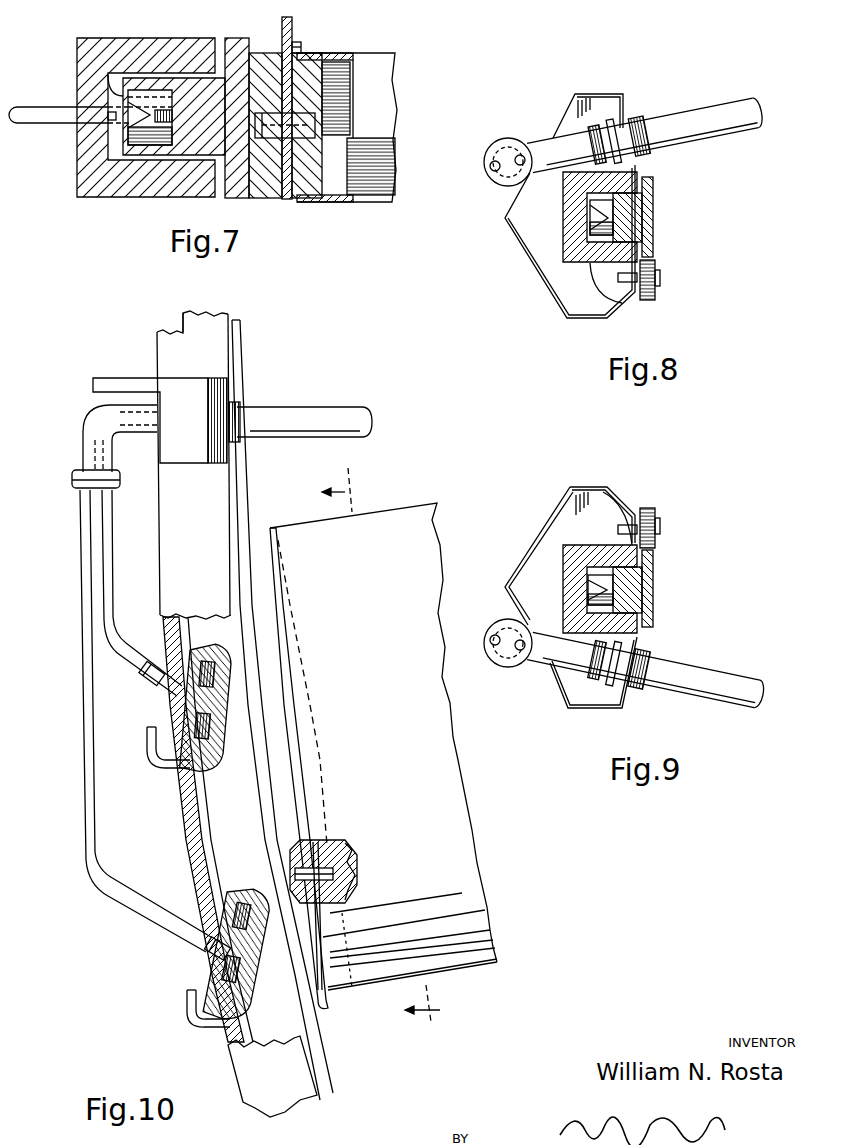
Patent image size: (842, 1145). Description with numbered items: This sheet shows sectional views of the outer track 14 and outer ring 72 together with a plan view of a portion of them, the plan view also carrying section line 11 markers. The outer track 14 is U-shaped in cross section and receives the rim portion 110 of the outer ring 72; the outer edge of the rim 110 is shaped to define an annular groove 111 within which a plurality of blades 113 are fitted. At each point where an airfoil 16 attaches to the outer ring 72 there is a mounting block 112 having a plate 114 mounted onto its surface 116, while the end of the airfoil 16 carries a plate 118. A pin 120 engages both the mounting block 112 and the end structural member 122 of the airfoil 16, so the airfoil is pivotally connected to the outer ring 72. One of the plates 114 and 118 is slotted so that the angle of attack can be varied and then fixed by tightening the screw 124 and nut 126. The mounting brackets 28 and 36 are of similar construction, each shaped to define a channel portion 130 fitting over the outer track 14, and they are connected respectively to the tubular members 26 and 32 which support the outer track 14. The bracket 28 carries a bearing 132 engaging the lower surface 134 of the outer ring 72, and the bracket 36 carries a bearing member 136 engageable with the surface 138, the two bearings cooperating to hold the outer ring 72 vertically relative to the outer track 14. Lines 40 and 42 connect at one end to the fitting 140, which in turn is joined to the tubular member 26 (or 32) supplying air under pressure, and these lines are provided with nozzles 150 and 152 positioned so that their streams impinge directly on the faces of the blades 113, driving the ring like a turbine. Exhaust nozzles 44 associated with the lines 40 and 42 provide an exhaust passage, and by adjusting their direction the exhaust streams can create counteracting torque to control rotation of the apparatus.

In FIG. 10, the section line 11- 11 is at (394, 745).
In FIG. 7, the outer track 14 is at (185, 38).
In FIG. 8, the outer track 14 is at (578, 250).
In FIG. 9, the outer track 14 is at (567, 558).
In FIG. 10, the outer track 14 is at (162, 333).
In FIG. 10, the airfoil 16 is at (422, 503).
In FIG. 8, the tubular member 26 is at (722, 103).
In FIG. 10, the tubular member 26 is at (313, 407).
In FIG. 8, the mounting bracket 28 is at (617, 94).
In FIG. 10, the mounting bracket 28 is at (132, 367).
In FIG. 9, the tubular member 32 is at (705, 668).
In FIG. 9, the mounting bracket 36 is at (570, 700).
In FIG. 7, the line 40 is at (53, 105).
In FIG. 10, the line 40 is at (117, 563).
In FIG. 10, the line 42 is at (102, 853).
In FIG. 10, the exhaust nozzle 44 is at (147, 740).
In FIG. 7, the outer ring 72 is at (235, 38).
In FIG. 8, the outer ring 72 is at (650, 177).
In FIG. 9, the outer ring 72 is at (652, 595).
In FIG. 10, the outer ring 72 is at (247, 355).
In FIG. 7, the rim portion 110 is at (183, 147).
In FIG. 10, the rim portion 110 is at (213, 313).
In FIG. 7, the annular groove 111 is at (110, 70).
In FIG. 10, the mounting block 112 is at (257, 523).
In FIG. 7, the blade 113 is at (117, 147).
In FIG. 10, the blade 113 is at (235, 907).
In FIG. 10, the plate 114 is at (320, 1007).
In FIG. 10, the surface 116 is at (263, 543).
In FIG. 10, the plate 118 is at (330, 970).
In FIG. 10, the pin 120 is at (330, 837).
In FIG. 10, the end structural member 122 is at (327, 788).
In FIG. 7, the screw 124 is at (283, 45).
In FIG. 7, the nut 126 is at (301, 42).
In FIG. 8, the channel portion 130 is at (600, 280).
In FIG. 9, the channel portion 130 is at (610, 497).
In FIG. 8, the bearing 132 is at (647, 298).
In FIG. 8, the lower surface 134 is at (655, 262).
In FIG. 9, the bearing member 136 is at (655, 515).
In FIG. 9, the surface 138 is at (657, 550).
In FIG. 10, the fitting 140 is at (83, 427).
In FIG. 7, the nozzle 150 is at (108, 120).
In FIG. 10, the nozzle 150 is at (170, 697).
In FIG. 10, the nozzle 152 is at (208, 967).